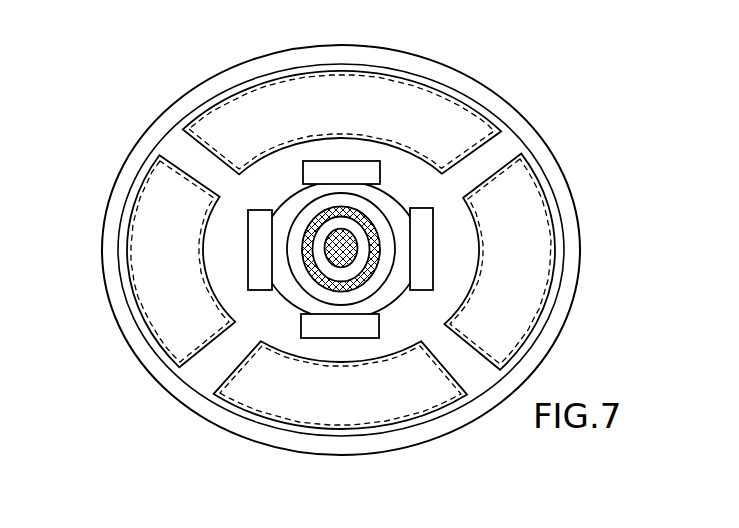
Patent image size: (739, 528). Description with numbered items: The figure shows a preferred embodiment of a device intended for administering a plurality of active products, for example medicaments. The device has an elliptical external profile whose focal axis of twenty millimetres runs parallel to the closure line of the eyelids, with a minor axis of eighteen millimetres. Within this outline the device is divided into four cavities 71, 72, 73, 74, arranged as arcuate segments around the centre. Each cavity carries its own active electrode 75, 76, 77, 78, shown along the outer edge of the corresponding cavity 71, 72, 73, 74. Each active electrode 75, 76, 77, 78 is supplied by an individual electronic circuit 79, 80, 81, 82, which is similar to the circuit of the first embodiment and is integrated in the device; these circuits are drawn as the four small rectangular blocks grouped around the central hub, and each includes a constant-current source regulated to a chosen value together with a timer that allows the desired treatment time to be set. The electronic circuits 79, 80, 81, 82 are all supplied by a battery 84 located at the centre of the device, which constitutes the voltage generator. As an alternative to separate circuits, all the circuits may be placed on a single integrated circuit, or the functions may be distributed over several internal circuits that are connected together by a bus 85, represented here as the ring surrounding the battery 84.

The cavity 71 is at (427, 113).
The cavity 72 is at (518, 197).
The cavity 73 is at (273, 398).
The cavity 74 is at (168, 263).
The active electrode 75 is at (285, 75).
The active electrode 76 is at (558, 213).
The active electrode 77 is at (203, 417).
The active electrode 78 is at (123, 233).
The electronic circuit 79 is at (363, 167).
The electronic circuit 80 is at (423, 250).
The electronic circuit 81 is at (340, 332).
The electronic circuit 82 is at (257, 243).
The battery 84 is at (433, 217).
The bus 85 is at (313, 213).